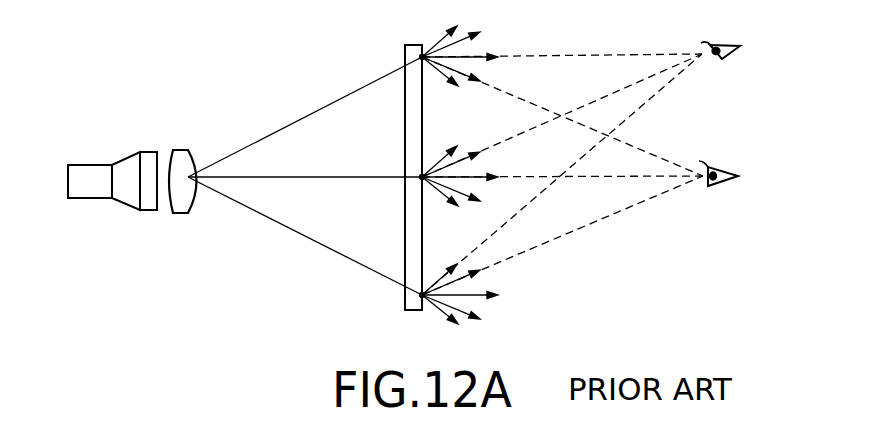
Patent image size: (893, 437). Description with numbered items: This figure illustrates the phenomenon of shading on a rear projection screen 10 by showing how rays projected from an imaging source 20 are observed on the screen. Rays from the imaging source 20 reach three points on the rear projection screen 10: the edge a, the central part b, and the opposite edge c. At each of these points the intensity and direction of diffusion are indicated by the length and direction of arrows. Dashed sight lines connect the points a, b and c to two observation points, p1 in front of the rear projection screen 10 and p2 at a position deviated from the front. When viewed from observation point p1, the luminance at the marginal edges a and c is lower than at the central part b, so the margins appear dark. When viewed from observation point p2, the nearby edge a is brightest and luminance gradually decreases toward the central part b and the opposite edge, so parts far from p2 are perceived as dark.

The rear projection screen 10 is at (410, 45).
The imaging source 20 is at (90, 165).
The edge point a is at (439, 56).
The central part b is at (439, 177).
The edge point c is at (439, 294).
The observation point p1 is at (737, 175).
The observation point p2 is at (741, 42).